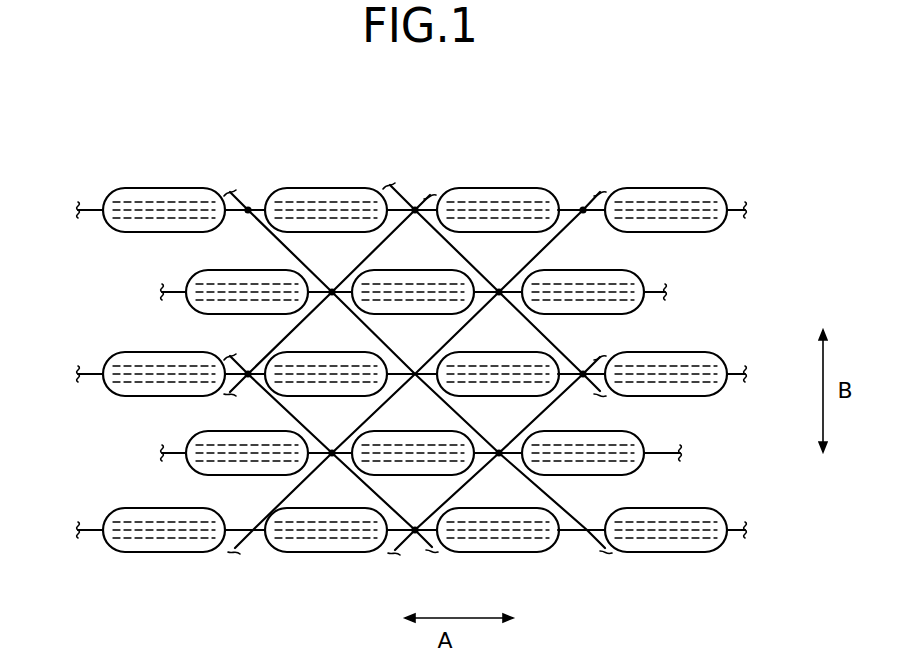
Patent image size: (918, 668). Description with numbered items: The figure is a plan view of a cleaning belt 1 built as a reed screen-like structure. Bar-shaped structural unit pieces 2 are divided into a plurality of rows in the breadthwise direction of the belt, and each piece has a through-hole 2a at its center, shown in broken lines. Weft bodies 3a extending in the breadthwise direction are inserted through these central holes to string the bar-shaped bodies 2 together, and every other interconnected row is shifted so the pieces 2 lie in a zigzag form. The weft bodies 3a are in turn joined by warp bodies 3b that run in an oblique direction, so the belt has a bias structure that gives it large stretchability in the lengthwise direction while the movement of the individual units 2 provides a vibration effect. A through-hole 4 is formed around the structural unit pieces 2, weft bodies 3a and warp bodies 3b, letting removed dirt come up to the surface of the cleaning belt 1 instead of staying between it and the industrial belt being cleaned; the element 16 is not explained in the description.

The cleaning belt 1 is at (413, 192).
The bar-shaped structural unit piece 2 is at (172, 190).
The through-hole 2a is at (745, 200).
The weft body 3a is at (92, 205).
The warp body 3b is at (377, 253).
The through-hole 4 is at (297, 250).
The junction 16 is at (260, 210).